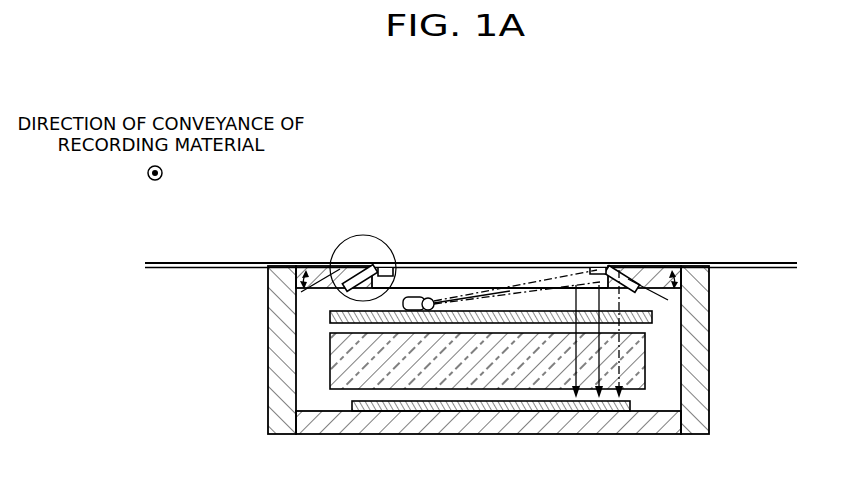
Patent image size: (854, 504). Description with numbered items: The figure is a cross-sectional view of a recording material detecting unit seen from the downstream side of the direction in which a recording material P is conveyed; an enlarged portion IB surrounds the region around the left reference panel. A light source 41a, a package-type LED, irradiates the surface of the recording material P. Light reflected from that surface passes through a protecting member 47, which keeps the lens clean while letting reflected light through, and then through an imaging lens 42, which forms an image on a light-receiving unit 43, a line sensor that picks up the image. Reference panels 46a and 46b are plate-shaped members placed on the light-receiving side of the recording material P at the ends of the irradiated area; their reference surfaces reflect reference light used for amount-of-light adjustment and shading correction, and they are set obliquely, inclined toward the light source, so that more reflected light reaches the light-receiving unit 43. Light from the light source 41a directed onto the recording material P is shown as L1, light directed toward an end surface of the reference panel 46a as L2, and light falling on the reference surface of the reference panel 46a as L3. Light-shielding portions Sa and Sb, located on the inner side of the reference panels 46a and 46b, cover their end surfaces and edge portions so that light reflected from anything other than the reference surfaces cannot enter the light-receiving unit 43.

The recording material P is at (228, 262).
The enlarged portion / housing of detector IB is at (333, 246).
The reference panel 46b is at (362, 262).
The light-shielding portion Sb is at (393, 265).
The light source 41a is at (430, 297).
The irradiated light L1 is at (507, 262).
The irradiated light L2 is at (545, 262).
The light-shielding portion Sa is at (592, 262).
The irradiated light L3 is at (617, 262).
The reference panel 46a is at (634, 262).
The protecting member 47 is at (331, 317).
The imaging lens 42 is at (336, 355).
The light-receiving unit 43 is at (468, 410).